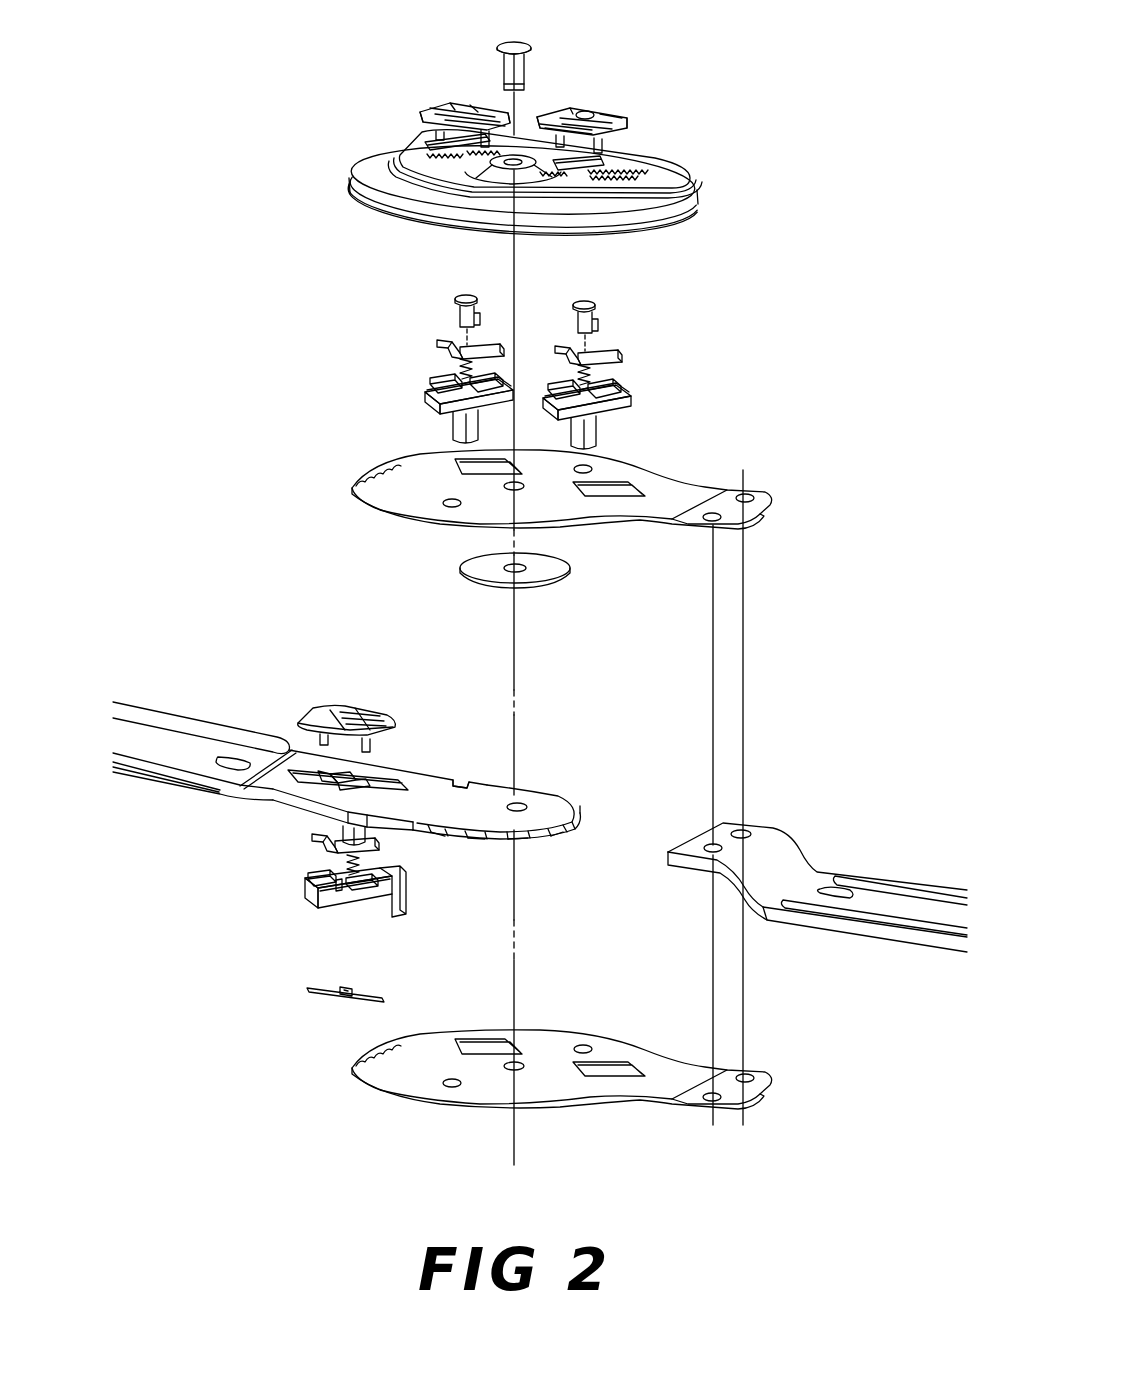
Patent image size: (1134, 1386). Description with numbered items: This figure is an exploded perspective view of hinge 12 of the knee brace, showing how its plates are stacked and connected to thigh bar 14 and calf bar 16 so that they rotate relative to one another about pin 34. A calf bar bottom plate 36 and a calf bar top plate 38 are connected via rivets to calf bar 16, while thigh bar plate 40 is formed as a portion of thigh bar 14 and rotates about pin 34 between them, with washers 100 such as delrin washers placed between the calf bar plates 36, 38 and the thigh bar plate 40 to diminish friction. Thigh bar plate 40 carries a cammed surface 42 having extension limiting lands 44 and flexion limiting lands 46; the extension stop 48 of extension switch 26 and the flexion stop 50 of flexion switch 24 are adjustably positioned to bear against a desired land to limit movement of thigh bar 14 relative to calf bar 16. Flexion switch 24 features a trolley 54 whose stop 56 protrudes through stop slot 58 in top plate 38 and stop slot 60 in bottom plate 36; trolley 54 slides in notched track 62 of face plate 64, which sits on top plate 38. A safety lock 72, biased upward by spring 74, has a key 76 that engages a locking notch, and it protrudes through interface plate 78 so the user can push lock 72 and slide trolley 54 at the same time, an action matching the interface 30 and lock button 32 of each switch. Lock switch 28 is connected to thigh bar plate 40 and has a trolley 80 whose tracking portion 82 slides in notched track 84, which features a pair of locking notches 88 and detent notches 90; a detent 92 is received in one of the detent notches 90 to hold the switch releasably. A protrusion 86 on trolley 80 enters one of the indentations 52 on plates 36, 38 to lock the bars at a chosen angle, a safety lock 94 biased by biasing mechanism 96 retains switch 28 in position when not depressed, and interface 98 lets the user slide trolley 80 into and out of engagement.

The hinge 12 is at (290, 539).
The thigh bar 14 is at (180, 710).
The calf bar 16 is at (863, 868).
The flexion switch 24 is at (624, 336).
The extension switch 26 is at (442, 362).
The lock switch 28 is at (301, 868).
The interface 30 is at (620, 108).
The lock button 32 is at (594, 304).
The pin 34 is at (508, 78).
The calf bar bottom plate 36 is at (666, 1076).
The calf bar top plate 38 is at (696, 490).
The thigh bar plate 40 is at (306, 810).
The cammed surface 42 is at (578, 806).
The extension limiting lands 44 is at (510, 786).
The flexion limiting lands 46 is at (510, 838).
The extension stop 48 is at (452, 440).
The flexion stop 50 is at (598, 448).
The indentations 52 is at (378, 1058).
The trolley 54 is at (622, 408).
The stop 56 is at (606, 440).
The stop slot 58 is at (610, 498).
The stop slot 60 is at (602, 1072).
The notched track 62 is at (615, 165).
The face plate 64 is at (695, 180).
The safety lock 72 is at (583, 302).
The spring 74 is at (592, 388).
The key 76 is at (600, 328).
The interface plate 78 is at (585, 106).
The trolley 80 is at (364, 914).
The tracking portion 82 is at (306, 890).
The notched track 84 is at (385, 780).
The protrusion 86 is at (406, 900).
The locking notches 88 is at (345, 776).
The detent notches 90 is at (320, 775).
The detent 92 is at (326, 846).
The safety lock 94 is at (360, 830).
The biasing mechanism 96 is at (362, 860).
The interface 98 is at (370, 705).
The washers 100 is at (555, 583).